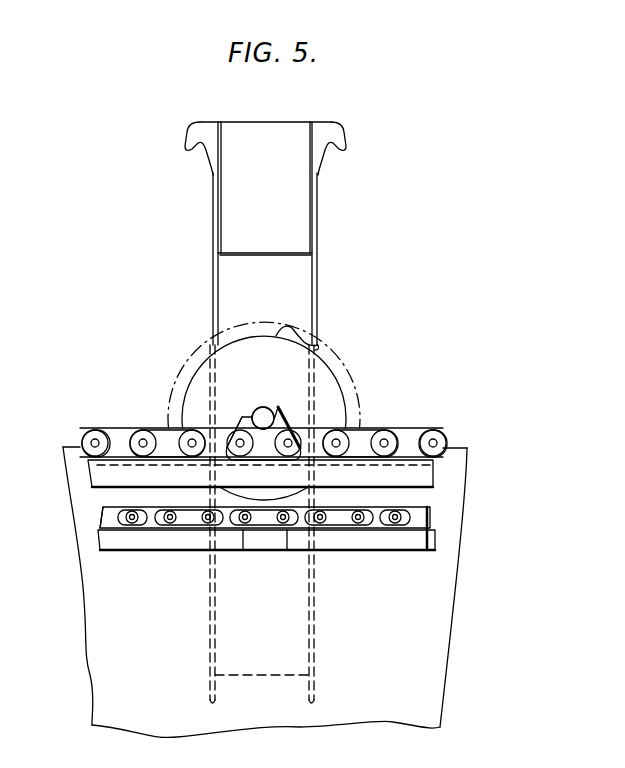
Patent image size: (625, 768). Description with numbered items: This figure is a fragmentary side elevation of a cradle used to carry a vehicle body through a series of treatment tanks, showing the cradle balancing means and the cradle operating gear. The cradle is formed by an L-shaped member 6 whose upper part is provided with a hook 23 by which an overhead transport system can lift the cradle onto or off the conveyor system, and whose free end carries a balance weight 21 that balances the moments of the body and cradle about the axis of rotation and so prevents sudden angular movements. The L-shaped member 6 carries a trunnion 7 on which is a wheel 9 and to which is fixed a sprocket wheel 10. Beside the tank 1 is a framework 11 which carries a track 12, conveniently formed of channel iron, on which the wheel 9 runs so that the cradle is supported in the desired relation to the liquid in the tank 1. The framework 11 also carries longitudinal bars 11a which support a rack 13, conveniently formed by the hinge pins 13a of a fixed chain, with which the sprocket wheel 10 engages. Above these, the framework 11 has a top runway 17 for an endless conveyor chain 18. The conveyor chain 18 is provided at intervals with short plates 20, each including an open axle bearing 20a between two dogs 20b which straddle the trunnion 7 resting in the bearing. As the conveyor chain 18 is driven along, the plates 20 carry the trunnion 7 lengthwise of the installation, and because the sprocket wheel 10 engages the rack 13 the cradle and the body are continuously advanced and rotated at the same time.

The tank 1 is at (435, 628).
The L-shaped member 6 is at (318, 283).
The trunnion 7 is at (265, 418).
The wheel 9 is at (200, 397).
The sprocket wheel 10 is at (203, 354).
The framework 11 is at (247, 541).
The longitudinal bar 11a is at (397, 543).
The track 12 is at (97, 505).
The rack 13 is at (408, 518).
The hinge pin 13a is at (133, 523).
The top runway 17 is at (437, 478).
The conveyor chain 18 is at (438, 428).
The plate 20 is at (299, 418).
The open axle bearing 20a is at (261, 429).
The dog 20b is at (290, 410).
The balance weight 21 is at (282, 202).
The hook 23 is at (187, 145).